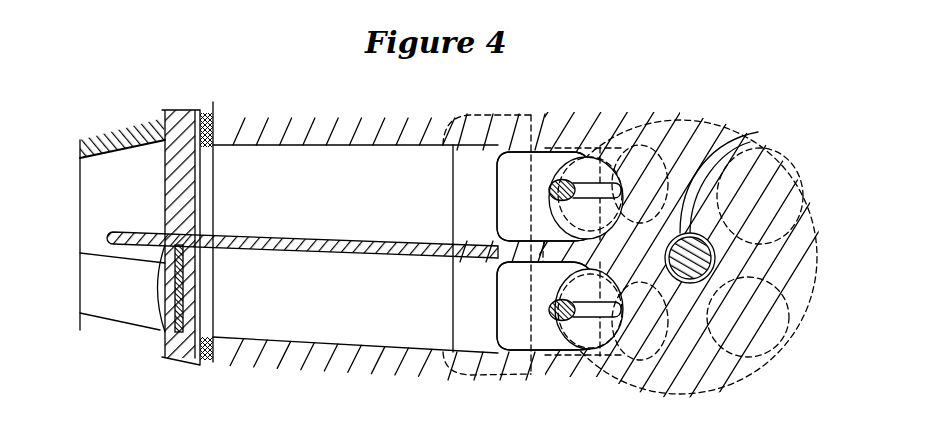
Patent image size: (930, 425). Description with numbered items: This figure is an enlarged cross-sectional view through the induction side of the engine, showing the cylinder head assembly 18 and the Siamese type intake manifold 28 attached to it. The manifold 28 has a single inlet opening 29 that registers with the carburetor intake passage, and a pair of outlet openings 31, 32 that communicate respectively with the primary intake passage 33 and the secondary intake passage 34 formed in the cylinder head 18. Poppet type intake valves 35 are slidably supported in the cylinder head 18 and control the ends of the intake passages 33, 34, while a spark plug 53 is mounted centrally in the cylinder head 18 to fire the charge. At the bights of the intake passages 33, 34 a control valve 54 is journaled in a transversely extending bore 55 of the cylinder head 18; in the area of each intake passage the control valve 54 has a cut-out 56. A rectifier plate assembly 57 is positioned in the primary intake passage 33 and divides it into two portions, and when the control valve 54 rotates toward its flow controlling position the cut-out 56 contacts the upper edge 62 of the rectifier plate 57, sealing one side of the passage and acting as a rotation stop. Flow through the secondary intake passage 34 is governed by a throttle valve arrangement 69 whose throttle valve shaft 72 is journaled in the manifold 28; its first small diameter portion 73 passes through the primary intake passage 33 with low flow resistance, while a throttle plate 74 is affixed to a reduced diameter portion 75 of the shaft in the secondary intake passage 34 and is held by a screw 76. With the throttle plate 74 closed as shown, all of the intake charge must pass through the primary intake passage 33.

The cylinder head assembly 18 is at (644, 48).
The intake manifold 28 is at (118, 123).
The inlet opening 29 is at (80, 312).
The outlet opening 31 is at (214, 118).
The outlet opening 32 is at (211, 363).
The primary intake passage 33 is at (296, 145).
The secondary intake passage 34 is at (278, 345).
The intake valve 35 is at (571, 180).
The spark plug 53 is at (757, 133).
The control valve 54 is at (440, 333).
The bore 55 is at (451, 152).
The cut-out 56 is at (500, 207).
The rectifier plate assembly 57 is at (517, 140).
The upper edge 62 is at (497, 172).
The throttle valve arrangement 69 is at (155, 356).
The throttle valve shaft 72 is at (182, 107).
The first small diameter portion 73 is at (165, 193).
The throttle plate 74 is at (80, 253).
The reduced diameter portion 75 is at (165, 322).
The screw 76 is at (188, 292).